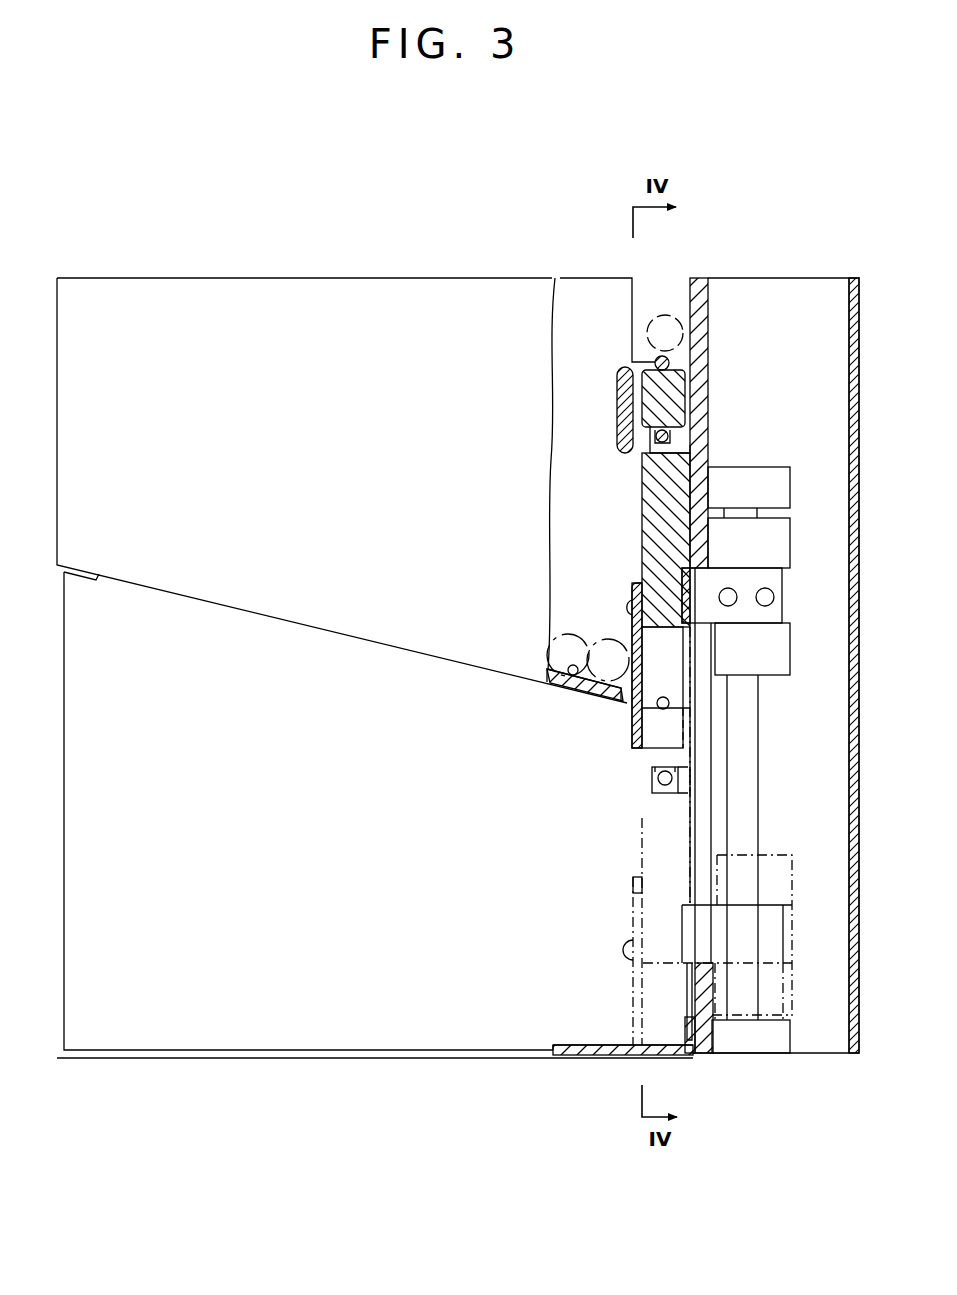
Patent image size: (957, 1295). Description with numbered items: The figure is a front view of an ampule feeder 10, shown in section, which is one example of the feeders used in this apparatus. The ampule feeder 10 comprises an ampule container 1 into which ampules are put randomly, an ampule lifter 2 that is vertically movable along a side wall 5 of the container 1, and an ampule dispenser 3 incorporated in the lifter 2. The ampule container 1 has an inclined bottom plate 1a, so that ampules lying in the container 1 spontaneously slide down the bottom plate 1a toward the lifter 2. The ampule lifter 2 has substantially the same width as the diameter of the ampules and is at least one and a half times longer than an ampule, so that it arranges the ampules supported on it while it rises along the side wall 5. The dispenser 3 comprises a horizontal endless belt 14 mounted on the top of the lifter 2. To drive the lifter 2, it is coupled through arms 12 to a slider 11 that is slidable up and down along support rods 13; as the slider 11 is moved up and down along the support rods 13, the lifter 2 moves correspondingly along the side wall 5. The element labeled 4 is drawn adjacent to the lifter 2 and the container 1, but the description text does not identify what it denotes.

The ampule container 1 is at (136, 276).
The inclined bottom plate 1a is at (576, 681).
The ampule lifter 2 is at (634, 510).
The ampule dispenser 3 is at (667, 345).
The guide strip 4 is at (632, 635).
The side wall 5 is at (708, 447).
The ampule feeder 10 is at (278, 273).
The slider 11 is at (790, 562).
The arms 12 is at (778, 606).
The support rods 13 is at (748, 750).
The horizontal endless belt 14 is at (708, 418).